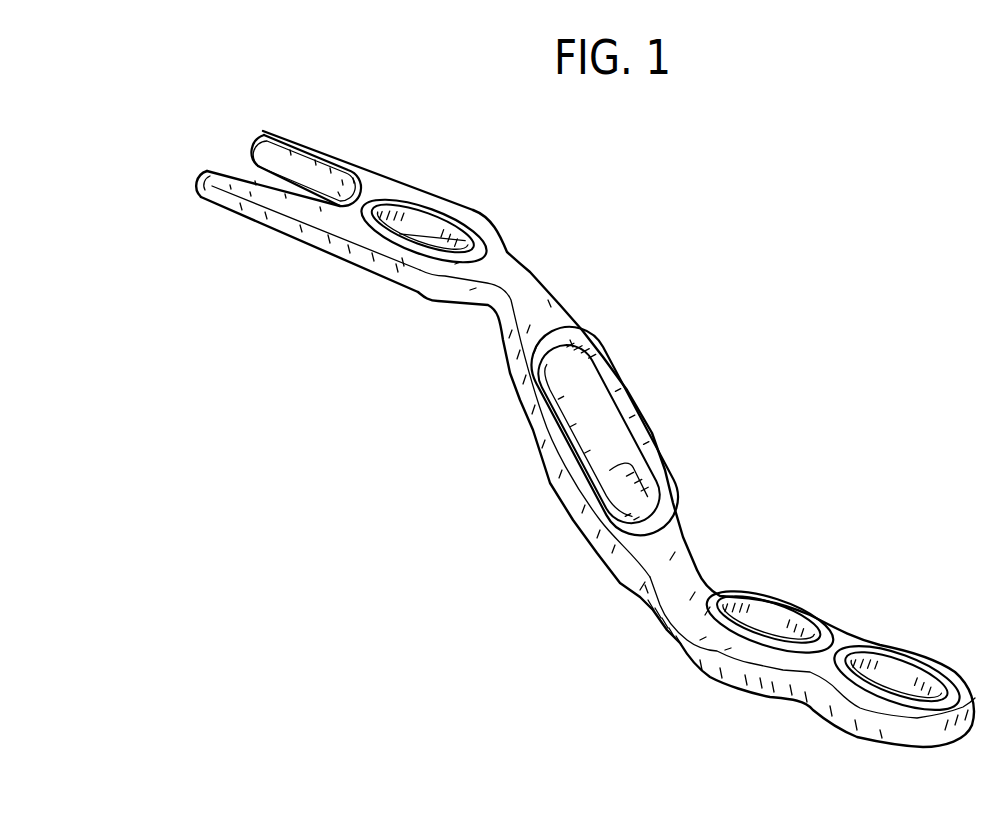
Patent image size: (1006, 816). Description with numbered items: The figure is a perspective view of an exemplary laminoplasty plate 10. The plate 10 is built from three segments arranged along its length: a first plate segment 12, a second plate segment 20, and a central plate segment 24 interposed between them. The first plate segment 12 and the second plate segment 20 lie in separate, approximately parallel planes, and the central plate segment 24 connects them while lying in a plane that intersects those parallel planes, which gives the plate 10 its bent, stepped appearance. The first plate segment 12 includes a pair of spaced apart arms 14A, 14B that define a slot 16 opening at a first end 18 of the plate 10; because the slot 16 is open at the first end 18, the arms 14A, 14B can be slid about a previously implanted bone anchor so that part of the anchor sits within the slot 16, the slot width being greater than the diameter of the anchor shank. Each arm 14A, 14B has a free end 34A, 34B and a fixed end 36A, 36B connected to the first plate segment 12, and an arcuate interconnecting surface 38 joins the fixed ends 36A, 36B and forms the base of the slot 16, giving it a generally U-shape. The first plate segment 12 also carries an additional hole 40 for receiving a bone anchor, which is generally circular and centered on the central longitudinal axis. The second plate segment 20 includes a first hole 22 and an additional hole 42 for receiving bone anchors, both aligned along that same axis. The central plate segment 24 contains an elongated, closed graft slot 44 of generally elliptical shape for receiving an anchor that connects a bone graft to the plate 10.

The laminoplasty plate 10 is at (710, 340).
The first plate segment 12 is at (393, 186).
The arm 14A is at (224, 210).
The arm 14B is at (300, 148).
The slot 16 is at (243, 168).
The first end 18 is at (189, 170).
The second plate segment 20 is at (748, 673).
The first hole 22 is at (782, 623).
The central plate segment 24 is at (562, 470).
The free end 34A is at (199, 185).
The free end 34B is at (260, 133).
The fixed end 36A is at (302, 236).
The fixed end 36B is at (360, 173).
The interconnecting surface 38 is at (339, 209).
The additional hole 40 is at (448, 230).
The additional hole 42 is at (902, 673).
The graft slot 44 is at (649, 471).